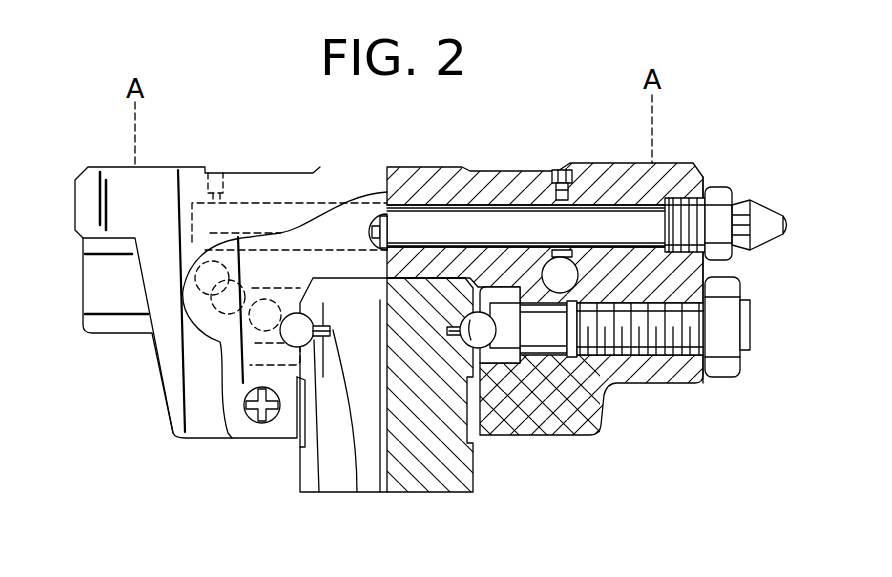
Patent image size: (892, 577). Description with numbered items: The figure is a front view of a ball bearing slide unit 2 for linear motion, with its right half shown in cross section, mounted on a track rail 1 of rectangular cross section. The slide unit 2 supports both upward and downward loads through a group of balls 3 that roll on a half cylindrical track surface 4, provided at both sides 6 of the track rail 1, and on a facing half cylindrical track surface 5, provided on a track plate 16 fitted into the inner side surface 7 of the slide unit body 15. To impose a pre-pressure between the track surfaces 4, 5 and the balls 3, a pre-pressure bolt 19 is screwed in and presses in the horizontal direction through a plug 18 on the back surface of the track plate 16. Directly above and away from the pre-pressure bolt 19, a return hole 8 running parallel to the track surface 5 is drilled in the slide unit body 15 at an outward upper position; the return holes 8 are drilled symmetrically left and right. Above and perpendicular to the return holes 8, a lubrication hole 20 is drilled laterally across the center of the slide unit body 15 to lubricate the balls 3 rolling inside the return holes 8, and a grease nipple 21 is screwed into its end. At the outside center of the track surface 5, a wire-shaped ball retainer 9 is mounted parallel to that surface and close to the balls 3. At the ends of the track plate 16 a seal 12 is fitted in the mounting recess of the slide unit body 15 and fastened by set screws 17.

The track rail 1 is at (322, 492).
The ball bearing slide unit 2 is at (340, 166).
The balls 3 is at (312, 492).
The track surface 4 is at (490, 352).
The track surface 5 is at (478, 312).
The sides 6 is at (490, 365).
The inner side surface 7 is at (298, 442).
The return hole 8 is at (180, 312).
The ball retainer 9 is at (356, 492).
The seal 12 is at (227, 385).
The slide unit body 15 is at (531, 192).
The track plate 16 is at (265, 352).
The set screws 17 is at (252, 418).
The plug 18 is at (591, 410).
The pre-pressure bolt 19 is at (660, 342).
The lubrication hole 20 is at (622, 215).
The grease nipple 21 is at (742, 210).